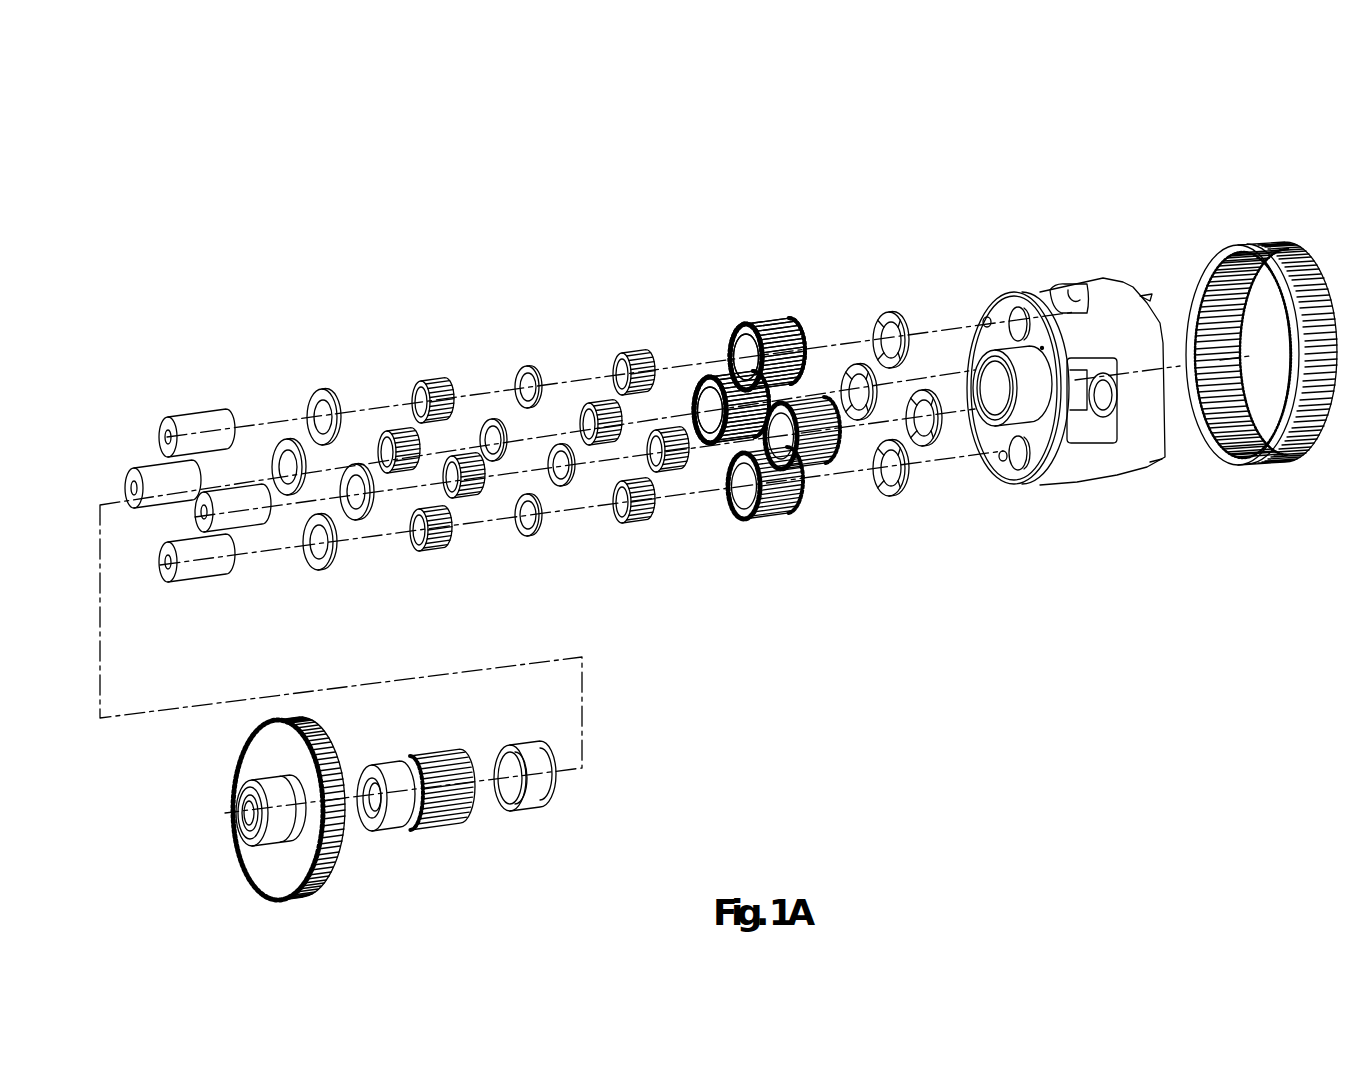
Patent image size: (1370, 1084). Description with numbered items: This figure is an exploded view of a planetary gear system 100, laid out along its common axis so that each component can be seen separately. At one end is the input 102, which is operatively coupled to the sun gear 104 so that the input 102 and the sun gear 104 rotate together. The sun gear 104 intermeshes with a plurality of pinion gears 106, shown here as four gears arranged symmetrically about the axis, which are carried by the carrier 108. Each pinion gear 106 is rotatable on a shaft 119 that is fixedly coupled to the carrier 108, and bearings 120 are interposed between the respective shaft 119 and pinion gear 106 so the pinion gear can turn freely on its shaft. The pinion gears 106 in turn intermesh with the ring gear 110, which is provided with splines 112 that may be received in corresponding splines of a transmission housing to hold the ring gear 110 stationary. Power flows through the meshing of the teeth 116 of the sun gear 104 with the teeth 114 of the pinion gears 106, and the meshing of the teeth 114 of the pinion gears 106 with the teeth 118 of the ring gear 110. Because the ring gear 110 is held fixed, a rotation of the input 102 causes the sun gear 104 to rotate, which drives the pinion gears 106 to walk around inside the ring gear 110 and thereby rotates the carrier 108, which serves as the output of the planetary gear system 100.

The planetary gear system 100 is at (1107, 157).
The input 102 is at (237, 863).
The sun gear 104 is at (423, 840).
The pinion gears 106 is at (718, 363).
The carrier 108 is at (1102, 487).
The ring gear 110 is at (1283, 480).
The splines 112 is at (1267, 230).
The teeth of pinion gears 114 is at (700, 373).
The teeth of sun gear 116 is at (457, 820).
The teeth of ring gear 118 is at (1197, 277).
The shaft 119 is at (150, 477).
The bearings 120 is at (398, 430).